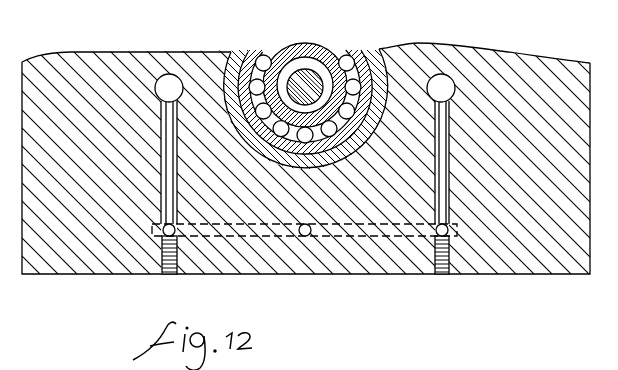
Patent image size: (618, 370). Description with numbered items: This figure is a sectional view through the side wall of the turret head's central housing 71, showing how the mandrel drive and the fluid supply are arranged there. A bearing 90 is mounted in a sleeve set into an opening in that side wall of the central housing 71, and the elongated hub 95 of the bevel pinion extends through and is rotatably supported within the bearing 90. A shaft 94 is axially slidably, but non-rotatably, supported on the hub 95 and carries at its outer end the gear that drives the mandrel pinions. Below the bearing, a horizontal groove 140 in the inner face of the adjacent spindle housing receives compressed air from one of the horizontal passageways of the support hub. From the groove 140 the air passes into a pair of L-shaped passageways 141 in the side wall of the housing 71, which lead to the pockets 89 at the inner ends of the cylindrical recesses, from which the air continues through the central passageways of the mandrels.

The central housing 71 is at (502, 72).
The pocket 89 is at (176, 76).
The bearing 90 is at (245, 65).
The shaft 94 is at (304, 74).
The elongated hub 95 is at (330, 50).
The horizontal groove 140 is at (220, 236).
The L-shaped passageways 141 is at (163, 182).